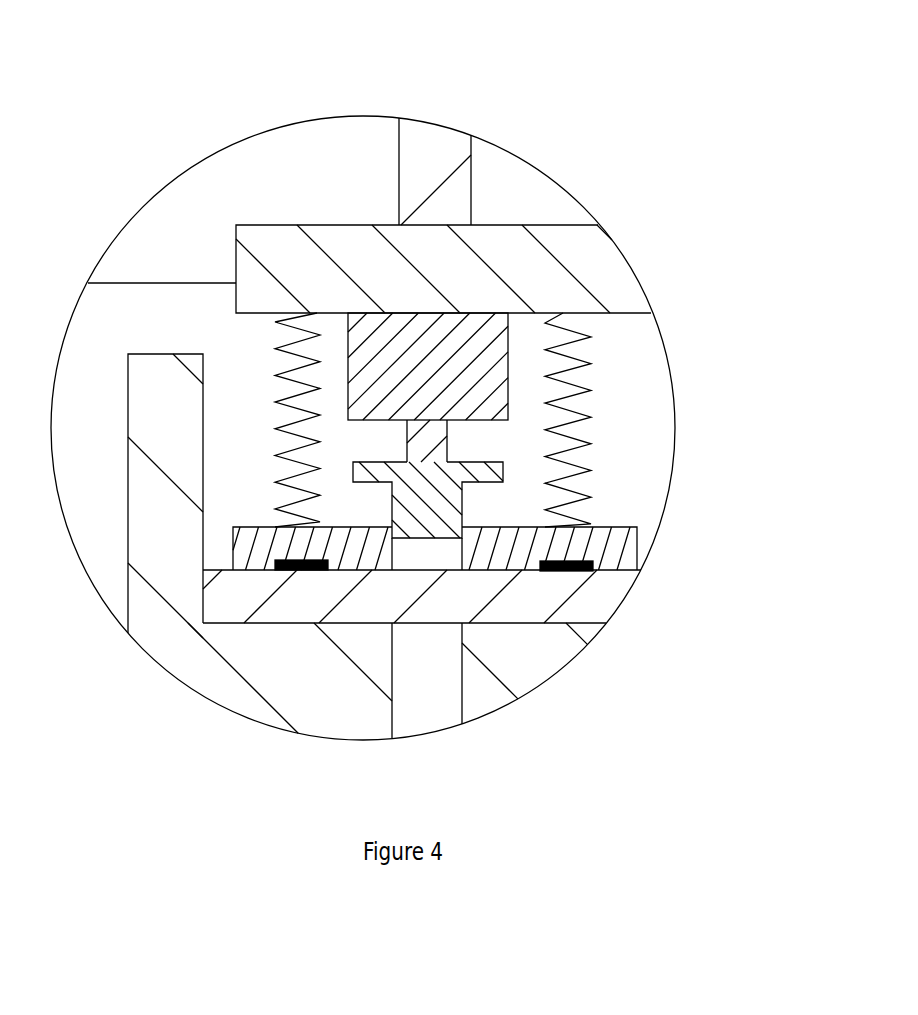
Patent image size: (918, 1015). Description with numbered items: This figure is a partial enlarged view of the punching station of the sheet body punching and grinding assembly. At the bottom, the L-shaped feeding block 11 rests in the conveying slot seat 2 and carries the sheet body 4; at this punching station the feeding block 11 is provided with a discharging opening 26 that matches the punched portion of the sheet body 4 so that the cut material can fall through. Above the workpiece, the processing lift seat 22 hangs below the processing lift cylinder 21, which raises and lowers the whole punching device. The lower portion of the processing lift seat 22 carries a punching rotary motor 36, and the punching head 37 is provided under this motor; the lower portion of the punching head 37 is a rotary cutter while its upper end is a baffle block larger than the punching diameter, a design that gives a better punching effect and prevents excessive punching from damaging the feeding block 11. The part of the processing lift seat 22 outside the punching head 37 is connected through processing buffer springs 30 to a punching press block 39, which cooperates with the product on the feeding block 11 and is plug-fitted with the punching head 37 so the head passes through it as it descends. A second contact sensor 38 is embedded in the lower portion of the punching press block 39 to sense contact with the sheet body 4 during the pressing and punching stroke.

The conveying slot seat 2 is at (183, 330).
The sheet body 4 is at (308, 602).
The feeding block 11 is at (172, 587).
The processing lift cylinder 21 is at (437, 167).
The processing lift seat 22 is at (342, 257).
The discharging opening 26 is at (412, 690).
The processing buffer spring 30 is at (572, 412).
The punching rotary motor 36 is at (472, 345).
The punching head 37 is at (422, 517).
The second contact sensor 38 is at (565, 570).
The punching press block 39 is at (598, 547).